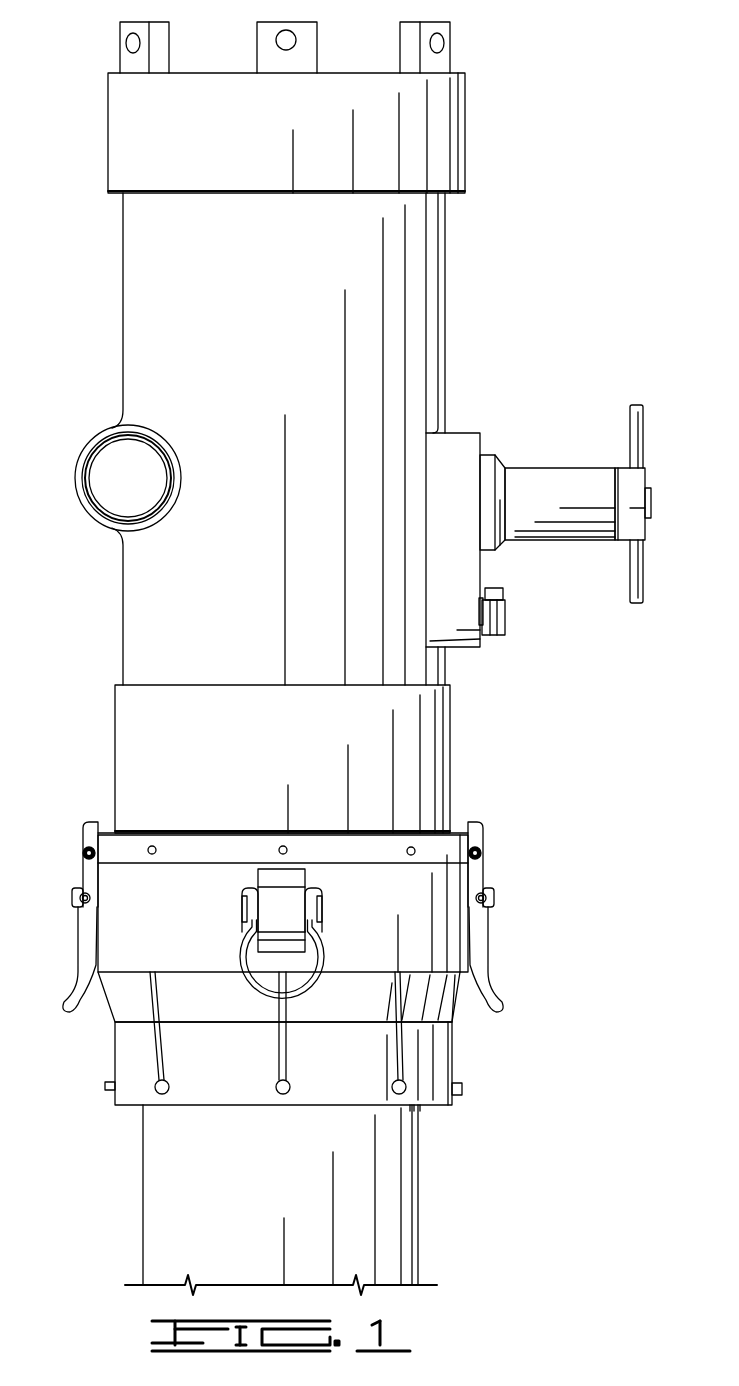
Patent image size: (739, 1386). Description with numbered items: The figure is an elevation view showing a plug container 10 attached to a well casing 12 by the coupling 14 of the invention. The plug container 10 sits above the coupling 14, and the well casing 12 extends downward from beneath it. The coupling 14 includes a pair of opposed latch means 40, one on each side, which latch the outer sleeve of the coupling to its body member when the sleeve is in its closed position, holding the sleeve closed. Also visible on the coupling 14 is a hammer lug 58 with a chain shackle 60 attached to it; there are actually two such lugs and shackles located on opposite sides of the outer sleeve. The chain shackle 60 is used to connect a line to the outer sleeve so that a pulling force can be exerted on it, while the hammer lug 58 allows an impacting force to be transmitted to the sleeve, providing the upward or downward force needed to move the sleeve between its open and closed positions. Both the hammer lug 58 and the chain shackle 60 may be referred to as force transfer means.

The plug container 10 is at (150, 283).
The well casing 12 is at (168, 1197).
The coupling 14 is at (104, 1013).
The latch means 40 is at (88, 868).
The hammer lug 58 is at (272, 922).
The chain shackle 60 is at (256, 987).